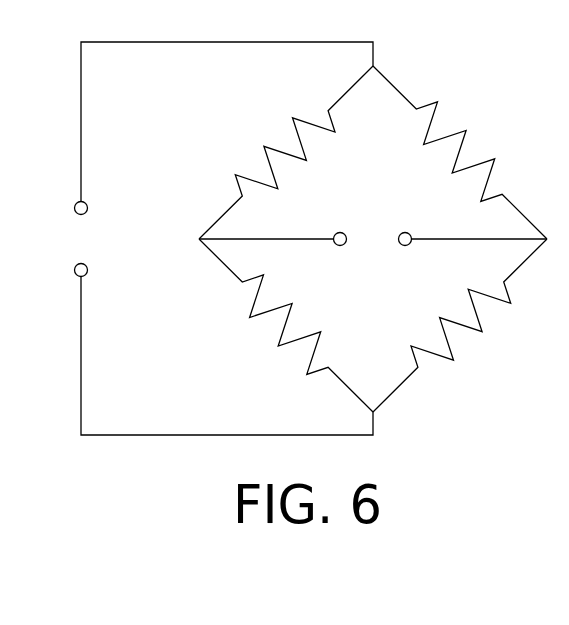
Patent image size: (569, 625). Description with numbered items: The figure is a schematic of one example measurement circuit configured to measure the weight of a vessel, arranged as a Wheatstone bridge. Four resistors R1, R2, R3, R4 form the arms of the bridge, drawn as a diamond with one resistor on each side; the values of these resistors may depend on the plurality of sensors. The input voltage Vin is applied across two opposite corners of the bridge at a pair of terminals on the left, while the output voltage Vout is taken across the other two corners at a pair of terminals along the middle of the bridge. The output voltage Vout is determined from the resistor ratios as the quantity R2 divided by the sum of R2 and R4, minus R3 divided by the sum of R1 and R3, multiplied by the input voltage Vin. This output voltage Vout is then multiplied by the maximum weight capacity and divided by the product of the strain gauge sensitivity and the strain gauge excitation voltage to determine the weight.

The resistor R1 is at (286, 152).
The resistor R2 is at (460, 152).
The resistor R3 is at (286, 325).
The resistor R4 is at (460, 325).
The input voltage Vin is at (78, 239).
The output voltage Vout is at (373, 240).